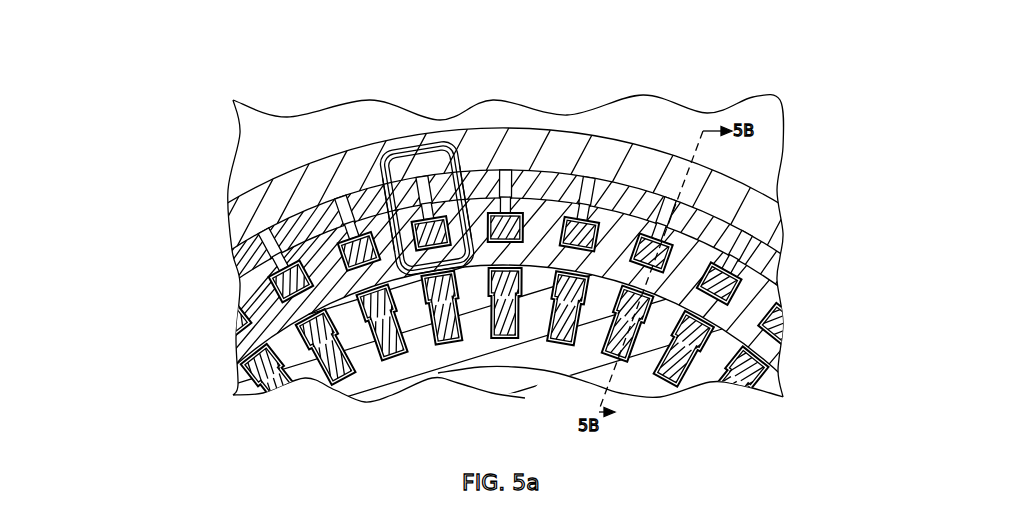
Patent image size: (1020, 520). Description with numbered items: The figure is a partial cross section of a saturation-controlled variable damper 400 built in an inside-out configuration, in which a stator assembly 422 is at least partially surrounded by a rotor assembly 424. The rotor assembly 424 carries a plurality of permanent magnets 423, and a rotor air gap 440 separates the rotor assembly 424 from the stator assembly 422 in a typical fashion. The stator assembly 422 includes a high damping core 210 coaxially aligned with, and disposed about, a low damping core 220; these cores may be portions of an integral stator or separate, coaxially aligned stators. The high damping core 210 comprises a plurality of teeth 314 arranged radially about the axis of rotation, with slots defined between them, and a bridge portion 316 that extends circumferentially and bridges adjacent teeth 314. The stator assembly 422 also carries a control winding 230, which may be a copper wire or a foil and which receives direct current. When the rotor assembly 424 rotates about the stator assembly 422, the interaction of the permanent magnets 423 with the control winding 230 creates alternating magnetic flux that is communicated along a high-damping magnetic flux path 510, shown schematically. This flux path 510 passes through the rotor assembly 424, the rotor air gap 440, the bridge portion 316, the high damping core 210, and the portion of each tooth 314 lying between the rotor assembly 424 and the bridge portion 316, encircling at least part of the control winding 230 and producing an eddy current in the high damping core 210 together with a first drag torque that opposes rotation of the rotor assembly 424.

The saturation-controlled variable damper 400 is at (97, 164).
The rotor assembly 424 is at (213, 251).
The rotor air gap 440 is at (246, 251).
The permanent magnets 423 is at (253, 258).
The stator assembly 422 is at (789, 356).
The control winding 230 is at (762, 288).
The high damping core 210 is at (250, 360).
The low damping core 220 is at (372, 388).
The high-damping magnetic flux path 510 is at (450, 142).
The teeth 314 is at (381, 228).
The bridge portion 316 is at (480, 226).